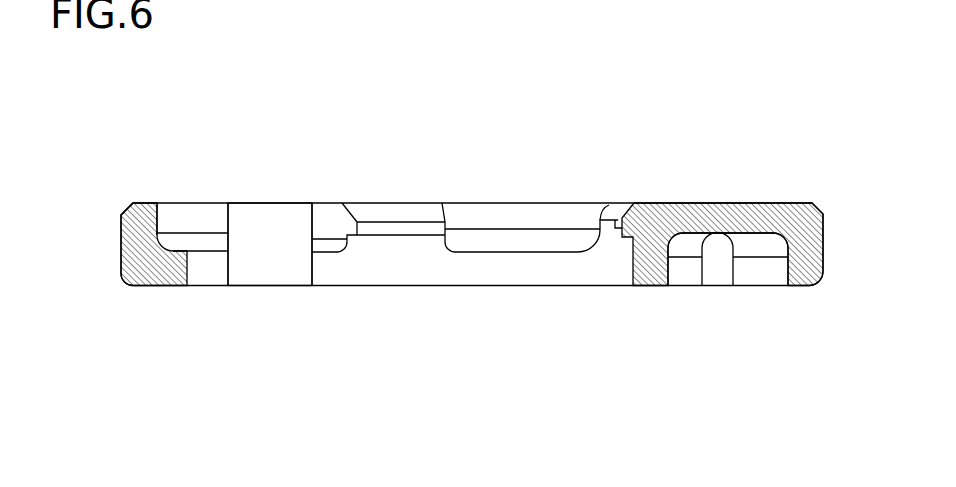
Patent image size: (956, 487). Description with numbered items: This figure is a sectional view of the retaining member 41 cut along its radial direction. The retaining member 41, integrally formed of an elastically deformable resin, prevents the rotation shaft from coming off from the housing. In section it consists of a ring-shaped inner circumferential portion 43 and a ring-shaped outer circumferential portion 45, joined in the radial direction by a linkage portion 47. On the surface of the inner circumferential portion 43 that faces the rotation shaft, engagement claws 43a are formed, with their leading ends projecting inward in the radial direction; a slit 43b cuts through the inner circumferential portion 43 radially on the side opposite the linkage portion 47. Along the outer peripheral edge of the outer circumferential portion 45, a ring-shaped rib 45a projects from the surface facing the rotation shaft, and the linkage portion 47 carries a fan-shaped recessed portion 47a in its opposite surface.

The retaining member 41 is at (688, 140).
The inner circumferential portion 43 is at (417, 270).
The engagement claws 43a is at (396, 228).
The slit 43b is at (273, 233).
The outer circumferential portion 45 is at (168, 283).
The rib 45a is at (143, 212).
The linkage portion 47 is at (740, 204).
The fan-shaped recessed portion 47a is at (750, 267).